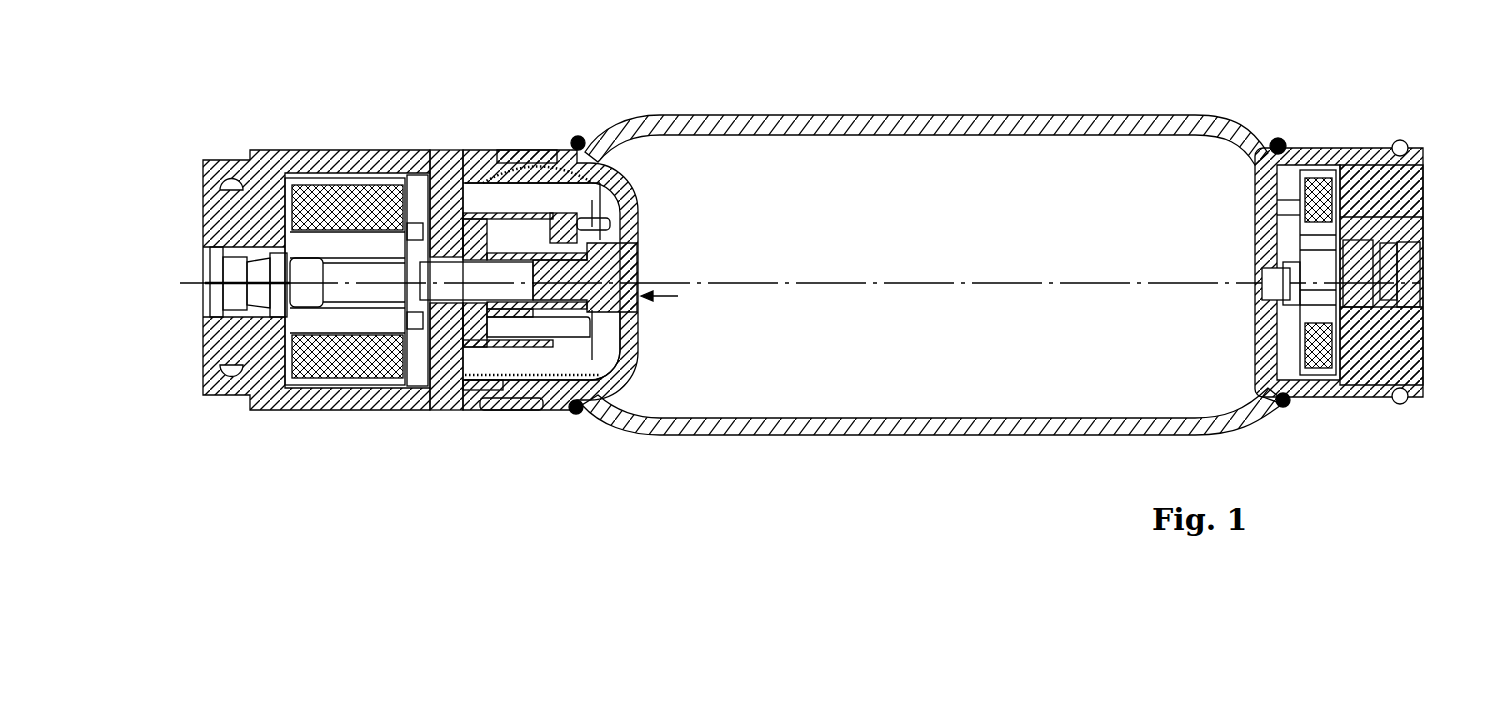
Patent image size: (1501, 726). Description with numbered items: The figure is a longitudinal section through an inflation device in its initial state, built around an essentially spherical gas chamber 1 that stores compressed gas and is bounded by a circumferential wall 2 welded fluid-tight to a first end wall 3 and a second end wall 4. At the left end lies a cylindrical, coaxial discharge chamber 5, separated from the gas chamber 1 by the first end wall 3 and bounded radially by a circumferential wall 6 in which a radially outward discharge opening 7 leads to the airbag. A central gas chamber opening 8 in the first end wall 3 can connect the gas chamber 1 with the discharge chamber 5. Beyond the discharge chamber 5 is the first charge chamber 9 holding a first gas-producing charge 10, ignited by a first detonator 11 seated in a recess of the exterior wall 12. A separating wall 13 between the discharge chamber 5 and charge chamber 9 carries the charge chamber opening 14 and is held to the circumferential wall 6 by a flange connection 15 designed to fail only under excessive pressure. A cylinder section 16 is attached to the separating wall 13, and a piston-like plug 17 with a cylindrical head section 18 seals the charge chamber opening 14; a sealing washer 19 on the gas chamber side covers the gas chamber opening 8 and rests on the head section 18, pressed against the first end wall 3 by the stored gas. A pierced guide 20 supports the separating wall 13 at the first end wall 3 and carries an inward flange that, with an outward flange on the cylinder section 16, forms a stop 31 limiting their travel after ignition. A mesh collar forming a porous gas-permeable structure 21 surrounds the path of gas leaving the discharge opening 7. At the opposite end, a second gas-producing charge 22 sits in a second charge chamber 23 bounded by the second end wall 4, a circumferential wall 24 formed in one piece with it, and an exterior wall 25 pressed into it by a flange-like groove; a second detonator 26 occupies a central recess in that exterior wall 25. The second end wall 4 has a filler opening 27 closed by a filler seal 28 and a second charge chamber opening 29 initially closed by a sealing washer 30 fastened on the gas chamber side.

The gas chamber 1 is at (933, 244).
The circumferential wall 2 is at (1030, 128).
The first end wall 3 is at (628, 190).
The second end wall 4 is at (1272, 353).
The discharge chamber 5 is at (547, 175).
The circumferential wall 6 is at (562, 405).
The discharge opening 7 is at (505, 160).
The gas chamber opening 8 is at (632, 318).
The first charge chamber 9 is at (410, 170).
The first gas-producing charge 10 is at (335, 185).
The first detonator 11 is at (260, 283).
The exterior wall 12 is at (217, 360).
The separating wall 13 is at (452, 172).
The charge chamber opening 14 is at (450, 400).
The plunger 15 is at (460, 300).
The cylinder section 16 is at (510, 240).
The plug 17 is at (682, 287).
The head section 18 is at (615, 263).
The sealing washer 19 is at (636, 222).
The guide 20 is at (522, 385).
The porous gas-permeable structure 21 is at (447, 380).
The second gas-producing charge 22 is at (1322, 180).
The second charge chamber 23 is at (1293, 367).
The circumferential wall 24 is at (1381, 253).
The exterior wall 25 is at (1410, 190).
The second detonator 26 is at (1365, 270).
The filler opening 27 is at (1258, 300).
The filler seal 28 is at (1260, 297).
The second charge chamber opening 29 is at (1262, 220).
The sealing washer 30 is at (1262, 208).
The stop 31 is at (580, 147).